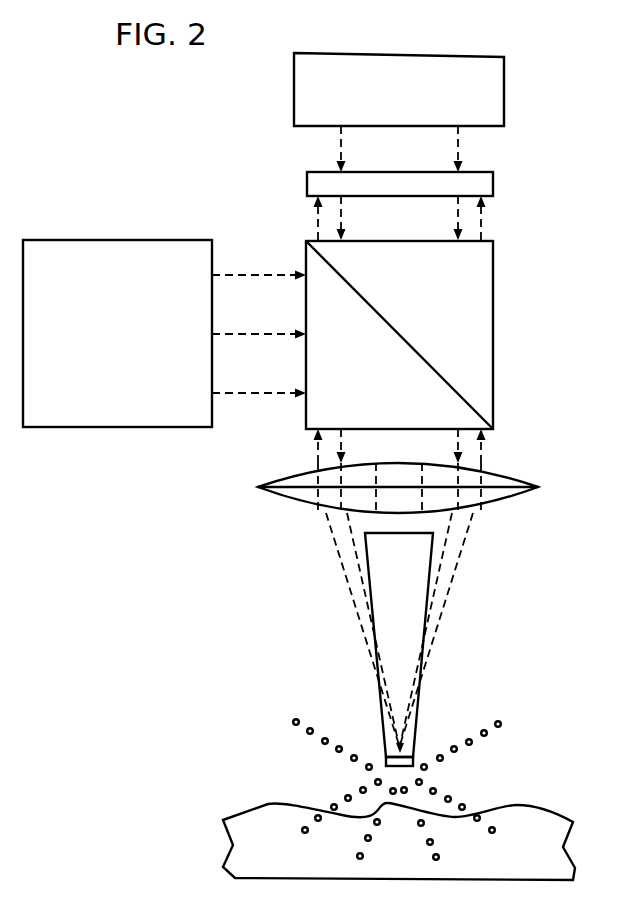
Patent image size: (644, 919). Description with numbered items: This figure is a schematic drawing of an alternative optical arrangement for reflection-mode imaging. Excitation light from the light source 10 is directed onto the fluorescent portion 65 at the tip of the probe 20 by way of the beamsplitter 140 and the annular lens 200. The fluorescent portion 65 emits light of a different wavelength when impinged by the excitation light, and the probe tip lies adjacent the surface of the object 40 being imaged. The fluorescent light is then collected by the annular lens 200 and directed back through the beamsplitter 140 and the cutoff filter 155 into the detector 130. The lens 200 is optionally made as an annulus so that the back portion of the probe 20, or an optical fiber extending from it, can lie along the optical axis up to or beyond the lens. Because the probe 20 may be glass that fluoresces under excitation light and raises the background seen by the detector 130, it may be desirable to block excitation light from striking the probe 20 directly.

The light source 10 is at (172, 240).
The detector 130 is at (462, 53).
The cutoff filter 155 is at (493, 184).
The beamsplitter 140 is at (493, 275).
The annular lens 200 is at (505, 472).
The probe 20 is at (410, 577).
The fluorescent portion 65 is at (413, 762).
The object 40 is at (567, 860).